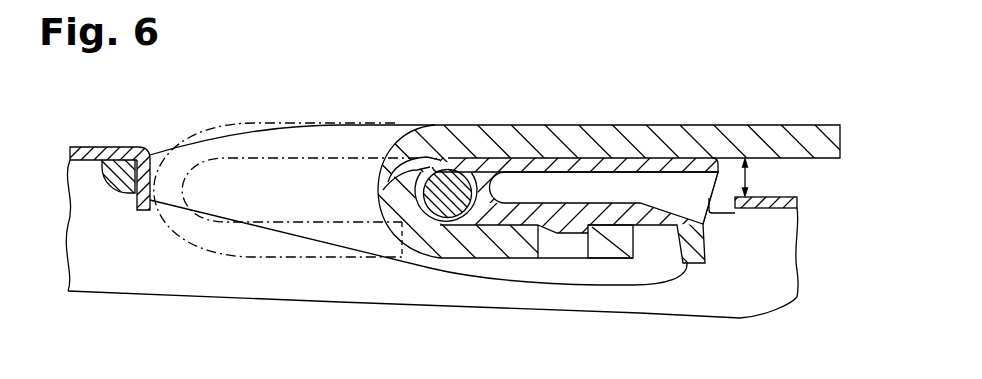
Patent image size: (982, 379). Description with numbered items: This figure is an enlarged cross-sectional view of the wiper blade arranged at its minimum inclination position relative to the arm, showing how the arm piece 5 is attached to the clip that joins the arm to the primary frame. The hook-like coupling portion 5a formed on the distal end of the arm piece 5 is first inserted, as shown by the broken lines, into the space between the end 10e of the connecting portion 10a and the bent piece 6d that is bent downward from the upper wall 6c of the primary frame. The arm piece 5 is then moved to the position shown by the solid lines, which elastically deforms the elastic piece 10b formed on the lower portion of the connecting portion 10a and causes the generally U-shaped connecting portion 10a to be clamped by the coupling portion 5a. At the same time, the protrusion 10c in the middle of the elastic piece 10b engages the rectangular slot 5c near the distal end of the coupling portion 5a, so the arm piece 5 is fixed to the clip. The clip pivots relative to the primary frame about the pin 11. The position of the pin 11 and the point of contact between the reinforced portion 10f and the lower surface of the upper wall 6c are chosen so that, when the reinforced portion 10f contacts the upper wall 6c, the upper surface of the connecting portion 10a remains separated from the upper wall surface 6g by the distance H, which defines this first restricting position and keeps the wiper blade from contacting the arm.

The arm piece 5 is at (250, 123).
The coupling portion 5a is at (313, 258).
The slot 5c is at (586, 255).
The upper wall 6c is at (108, 147).
The bent piece 6d is at (146, 210).
The upper wall surface 6g is at (797, 197).
The connecting portion 10a is at (556, 165).
The elastic piece 10b is at (622, 210).
The protrusion 10c is at (563, 240).
The end of the connecting portion 10e is at (388, 183).
The reinforced portion 10f is at (118, 193).
The pin 11 is at (462, 186).
The distance H is at (749, 177).